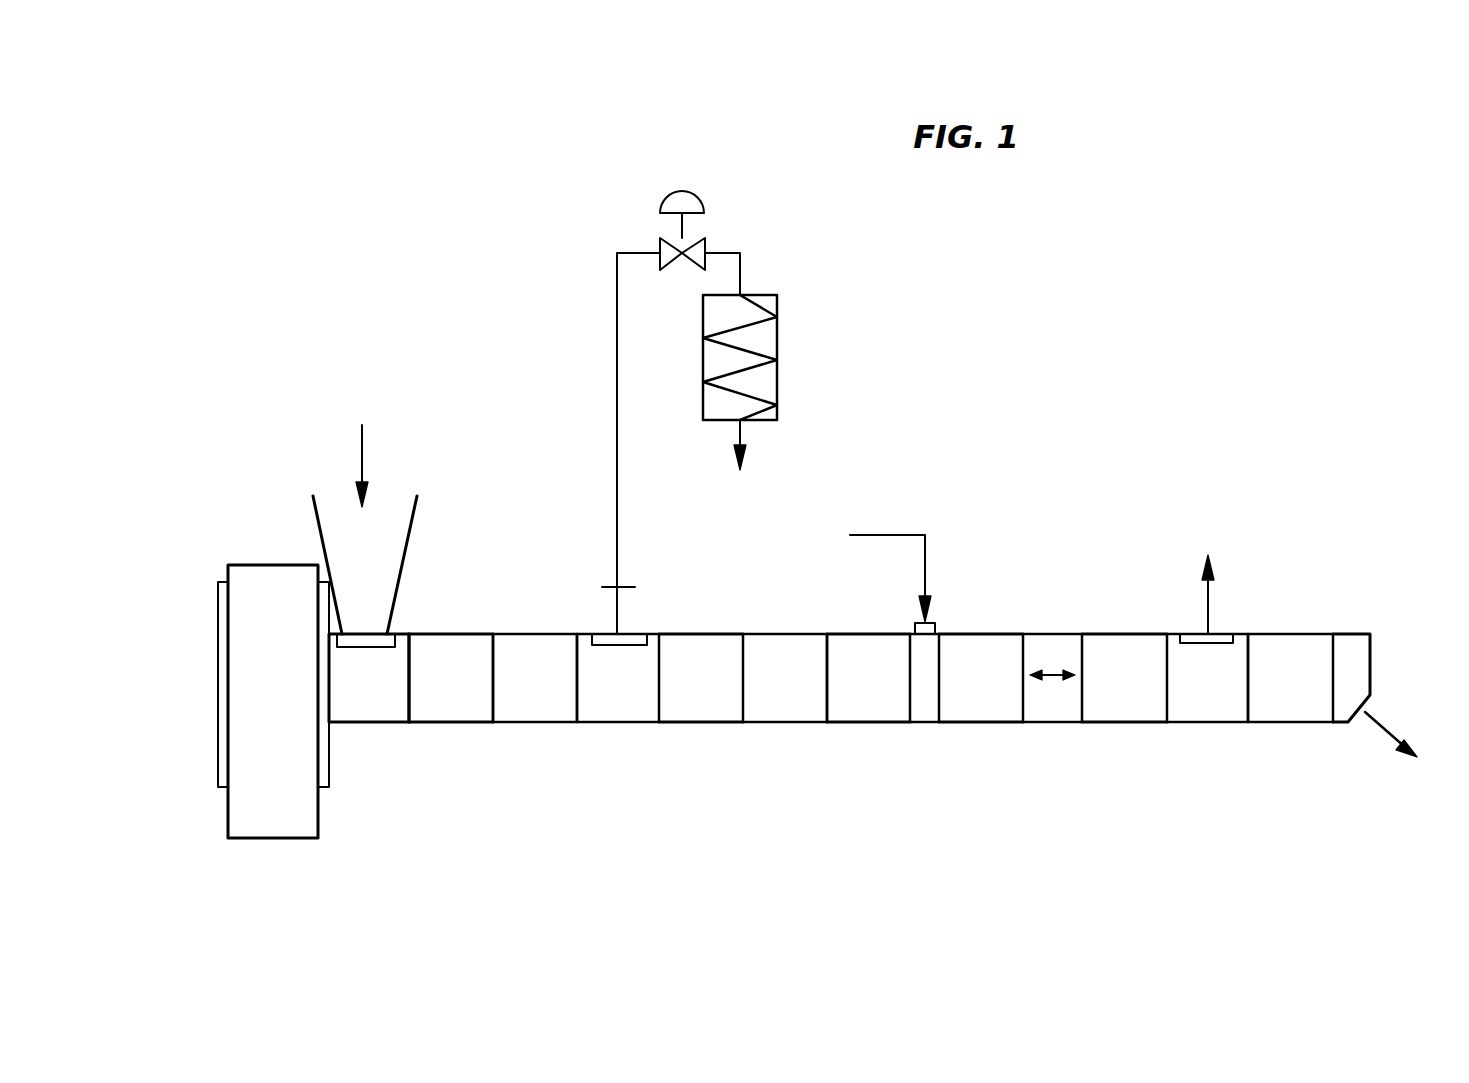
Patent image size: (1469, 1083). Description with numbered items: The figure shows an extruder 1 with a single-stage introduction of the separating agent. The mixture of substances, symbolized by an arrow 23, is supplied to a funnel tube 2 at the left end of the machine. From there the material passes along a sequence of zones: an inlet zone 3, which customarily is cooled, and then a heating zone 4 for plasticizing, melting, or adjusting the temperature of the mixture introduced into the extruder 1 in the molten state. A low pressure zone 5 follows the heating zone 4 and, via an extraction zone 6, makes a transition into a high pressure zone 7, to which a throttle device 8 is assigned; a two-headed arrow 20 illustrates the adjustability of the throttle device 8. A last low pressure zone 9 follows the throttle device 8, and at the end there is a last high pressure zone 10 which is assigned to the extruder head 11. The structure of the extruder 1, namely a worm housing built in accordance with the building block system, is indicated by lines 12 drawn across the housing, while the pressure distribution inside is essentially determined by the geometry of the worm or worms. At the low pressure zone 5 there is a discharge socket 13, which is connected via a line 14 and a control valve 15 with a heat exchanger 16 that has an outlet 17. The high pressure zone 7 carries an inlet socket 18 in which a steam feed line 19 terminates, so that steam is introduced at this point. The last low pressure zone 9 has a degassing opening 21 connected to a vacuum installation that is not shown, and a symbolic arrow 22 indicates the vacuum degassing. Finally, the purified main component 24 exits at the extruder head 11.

The extruder 1 is at (210, 694).
The funnel tube 2 is at (383, 555).
The inlet zone 3 is at (375, 712).
The heating zone 4 is at (537, 712).
The low pressure zone 5 is at (620, 712).
The extraction zone 6 is at (788, 712).
The high pressure zone 7 is at (922, 712).
The throttle device 8 is at (1063, 712).
The last low pressure zone 9 is at (1212, 712).
The last high pressure zone 10 is at (1302, 712).
The extruder head 11 is at (1357, 652).
The lines 12 is at (490, 690).
The discharge socket 13 is at (617, 612).
The line 14 is at (617, 523).
The control valve 15 is at (700, 195).
The heat exchanger 16 is at (767, 342).
The outlet 17 is at (742, 435).
The inlet socket 18 is at (935, 625).
The steam feed line 19 is at (925, 557).
The two-headed arrow 20 is at (1050, 670).
The degassing opening 21 is at (1220, 637).
The symbolic arrow 22 is at (1208, 600).
The arrow 23 is at (363, 448).
The purified main component 24 is at (1380, 722).